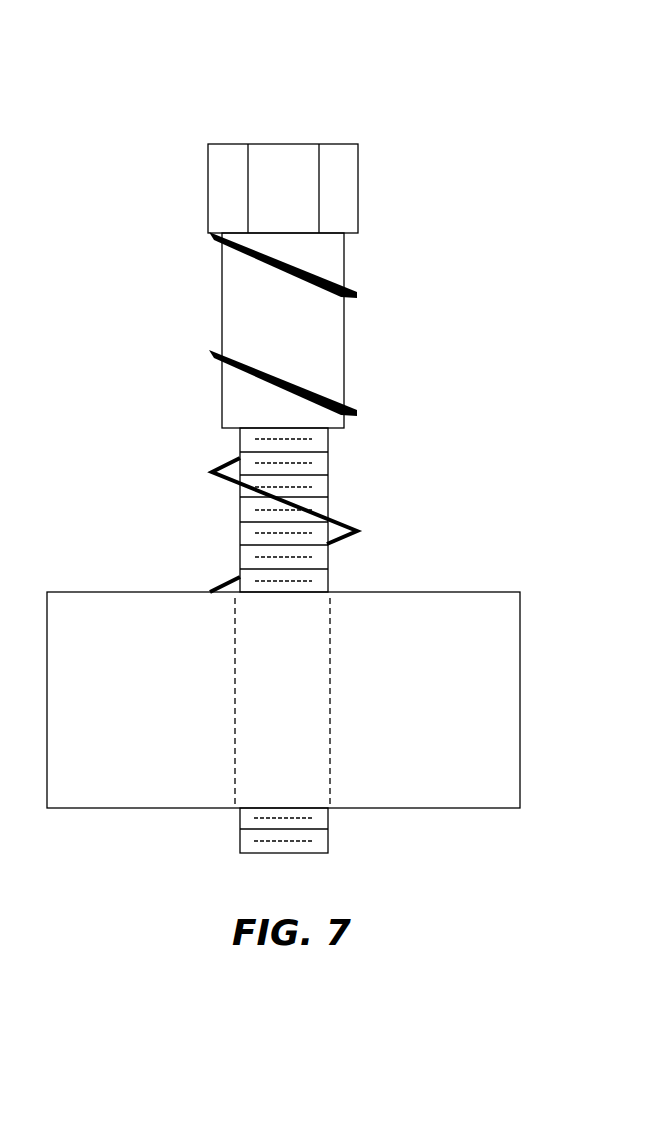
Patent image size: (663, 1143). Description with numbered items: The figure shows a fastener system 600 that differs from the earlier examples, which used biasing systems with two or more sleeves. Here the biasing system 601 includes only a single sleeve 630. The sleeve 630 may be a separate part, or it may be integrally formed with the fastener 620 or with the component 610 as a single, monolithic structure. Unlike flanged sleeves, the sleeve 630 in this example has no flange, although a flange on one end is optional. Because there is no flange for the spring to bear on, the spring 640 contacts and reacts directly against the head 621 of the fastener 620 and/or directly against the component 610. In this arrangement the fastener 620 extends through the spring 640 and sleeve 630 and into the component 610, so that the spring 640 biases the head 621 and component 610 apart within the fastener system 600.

The fastener system 600 is at (208, 44).
The biasing system 601 is at (126, 294).
The component 610 is at (126, 592).
The fastener 620 is at (341, 120).
The head 621 is at (208, 187).
The sleeve 630 is at (344, 335).
The spring 640 is at (213, 465).